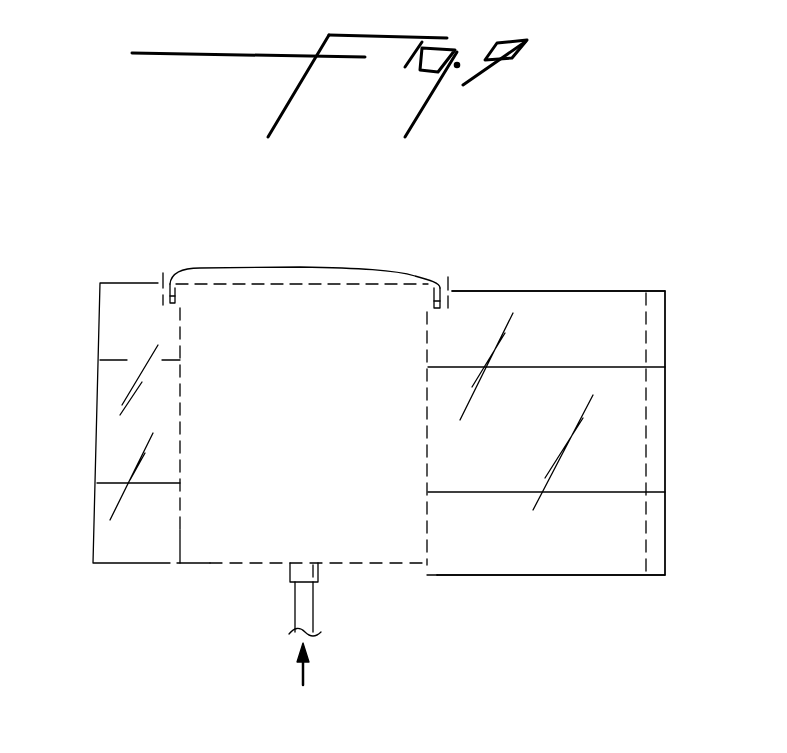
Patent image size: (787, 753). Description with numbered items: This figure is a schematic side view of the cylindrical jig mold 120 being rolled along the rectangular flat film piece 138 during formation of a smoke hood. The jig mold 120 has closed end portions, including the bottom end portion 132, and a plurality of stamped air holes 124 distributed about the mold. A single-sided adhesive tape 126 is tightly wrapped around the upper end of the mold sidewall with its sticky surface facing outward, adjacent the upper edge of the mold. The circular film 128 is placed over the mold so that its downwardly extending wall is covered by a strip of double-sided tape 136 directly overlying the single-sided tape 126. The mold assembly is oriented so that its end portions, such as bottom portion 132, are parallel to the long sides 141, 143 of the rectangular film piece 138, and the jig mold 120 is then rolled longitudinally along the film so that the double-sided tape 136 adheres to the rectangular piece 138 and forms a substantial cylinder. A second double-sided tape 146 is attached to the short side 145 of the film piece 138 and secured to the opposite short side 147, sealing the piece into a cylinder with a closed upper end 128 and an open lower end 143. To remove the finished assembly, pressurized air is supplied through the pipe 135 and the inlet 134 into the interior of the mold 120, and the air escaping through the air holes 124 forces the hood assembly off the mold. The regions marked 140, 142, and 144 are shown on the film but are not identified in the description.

The cylindrical jig mold 120 is at (427, 408).
The stamped air holes 124 is at (427, 500).
The single-sided adhesive tape 126 is at (177, 291).
The circular film 128 is at (383, 272).
The bottom end portion 132 is at (408, 575).
The inlet 134 is at (320, 573).
The pipe 135 is at (300, 597).
The double-sided tape 136 is at (450, 293).
The rectangular flat film piece 138 is at (679, 298).
The upper block 140 is at (593, 318).
The long side 141 is at (641, 293).
The lower block 142 is at (592, 555).
The long side 143 is at (535, 575).
The middle block 144 is at (610, 448).
The short side 145 is at (666, 351).
The second double-sided tape 146 is at (647, 403).
The short side 147 is at (98, 378).